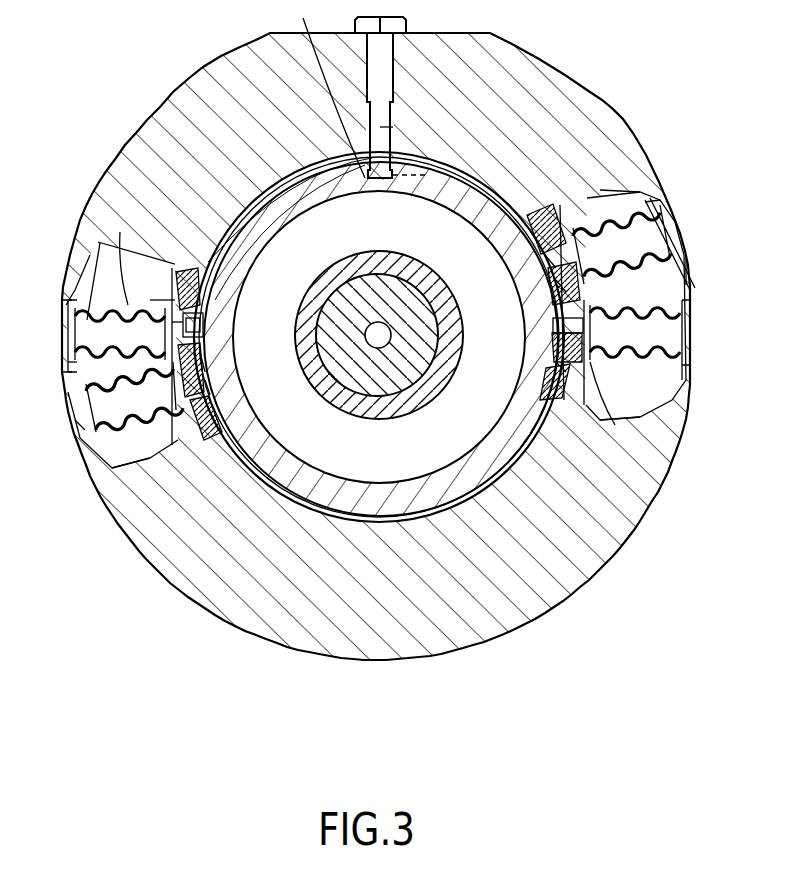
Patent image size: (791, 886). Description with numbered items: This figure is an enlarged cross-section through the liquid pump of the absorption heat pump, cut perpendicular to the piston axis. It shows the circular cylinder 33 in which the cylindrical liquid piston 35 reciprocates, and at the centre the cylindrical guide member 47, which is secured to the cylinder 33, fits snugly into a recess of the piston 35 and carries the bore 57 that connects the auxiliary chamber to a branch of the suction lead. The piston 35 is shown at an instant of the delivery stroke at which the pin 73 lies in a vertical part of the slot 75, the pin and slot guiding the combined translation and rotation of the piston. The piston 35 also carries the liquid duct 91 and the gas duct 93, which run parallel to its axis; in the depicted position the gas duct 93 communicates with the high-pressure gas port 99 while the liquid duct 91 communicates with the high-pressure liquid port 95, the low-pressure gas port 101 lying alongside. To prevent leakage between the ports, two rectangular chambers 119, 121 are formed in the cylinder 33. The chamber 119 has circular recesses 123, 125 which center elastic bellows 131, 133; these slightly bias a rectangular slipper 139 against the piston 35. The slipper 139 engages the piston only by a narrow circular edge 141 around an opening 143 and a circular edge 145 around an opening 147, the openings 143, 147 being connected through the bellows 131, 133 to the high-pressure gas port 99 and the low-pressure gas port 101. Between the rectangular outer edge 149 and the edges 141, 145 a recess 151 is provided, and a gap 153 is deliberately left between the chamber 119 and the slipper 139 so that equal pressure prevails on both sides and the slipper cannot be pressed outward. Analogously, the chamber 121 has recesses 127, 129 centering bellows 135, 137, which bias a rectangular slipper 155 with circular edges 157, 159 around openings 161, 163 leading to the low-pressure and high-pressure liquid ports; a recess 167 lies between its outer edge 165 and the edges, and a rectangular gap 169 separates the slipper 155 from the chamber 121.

The cylinder 33 is at (627, 507).
The liquid piston 35 is at (373, 463).
The guide member 47 is at (405, 372).
The bore 57 is at (377, 333).
The pin 73 is at (397, 127).
The slot 75 is at (552, 53).
The liquid duct 91 is at (563, 346).
The gas duct 93 is at (200, 320).
The high-pressure liquid port 95 is at (681, 231).
The high-pressure gas port 99 is at (54, 328).
The low-pressure gas port 101 is at (67, 423).
The rectangular chamber 119 is at (100, 268).
The rectangular chamber 121 is at (590, 168).
The circular recess 123 is at (82, 362).
The circular recess 125 is at (88, 448).
The circular recess 127 is at (628, 214).
The circular recess 129 is at (687, 380).
The elastic bellows 131 is at (122, 260).
The elastic bellows 133 is at (125, 482).
The elastic bellows 135 is at (612, 213).
The elastic bellows 137 is at (657, 387).
The rectangular slipper 139 is at (165, 300).
The circular edge 141 is at (200, 338).
The opening 143 is at (225, 284).
The circular edge 145 is at (200, 367).
The opening 147 is at (213, 391).
The rectangular outer edge 149 is at (230, 254).
The recess 151 is at (205, 297).
The gap 153 is at (215, 258).
The rectangular slipper 155 is at (597, 378).
The circular edge 157 is at (563, 287).
The circular edge 159 is at (565, 364).
The opening 161 is at (560, 263).
The opening 163 is at (563, 320).
The outer edge 165 is at (511, 222).
The recess 167 is at (510, 232).
The rectangular gap 169 is at (537, 205).